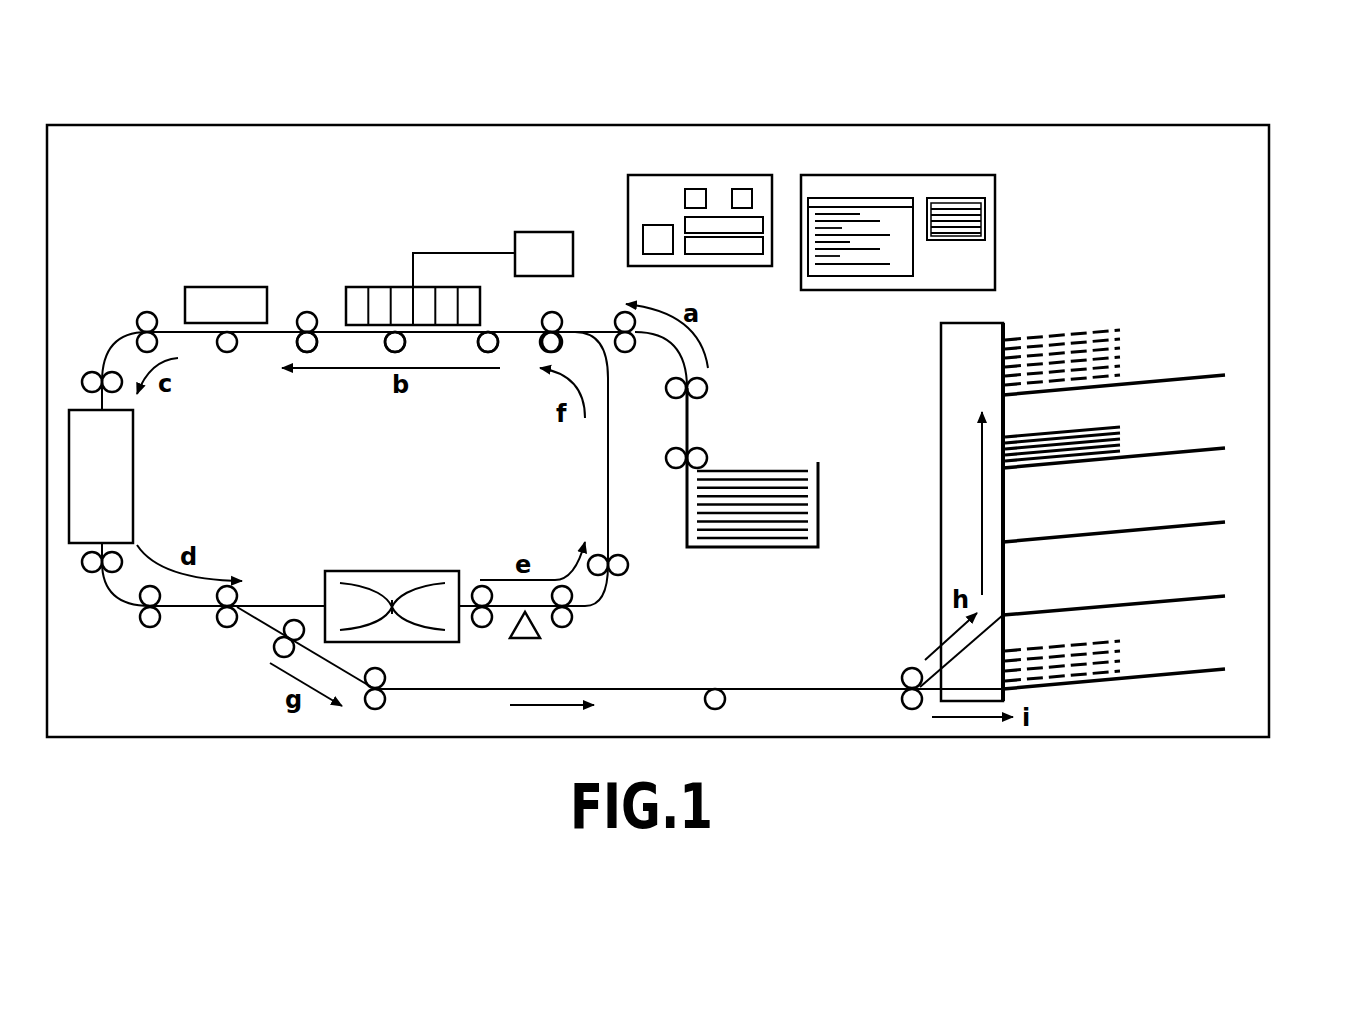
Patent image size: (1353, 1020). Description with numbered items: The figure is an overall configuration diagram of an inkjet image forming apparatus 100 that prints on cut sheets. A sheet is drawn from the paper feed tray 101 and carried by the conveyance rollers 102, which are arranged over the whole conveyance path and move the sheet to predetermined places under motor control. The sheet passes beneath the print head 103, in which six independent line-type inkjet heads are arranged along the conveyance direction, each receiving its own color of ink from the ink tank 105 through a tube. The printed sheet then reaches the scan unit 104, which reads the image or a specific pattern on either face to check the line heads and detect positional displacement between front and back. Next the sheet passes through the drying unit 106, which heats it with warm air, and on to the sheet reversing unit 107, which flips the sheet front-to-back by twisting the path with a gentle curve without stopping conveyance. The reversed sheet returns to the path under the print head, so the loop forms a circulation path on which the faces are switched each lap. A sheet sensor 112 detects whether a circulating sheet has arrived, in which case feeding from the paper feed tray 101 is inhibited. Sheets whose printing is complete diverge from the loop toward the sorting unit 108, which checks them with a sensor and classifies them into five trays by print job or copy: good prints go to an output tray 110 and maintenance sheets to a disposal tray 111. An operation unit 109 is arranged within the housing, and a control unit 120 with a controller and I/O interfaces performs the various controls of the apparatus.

The image forming apparatus 100 is at (1193, 125).
The paper feed tray 101 is at (818, 500).
The conveyance rollers 102 is at (392, 352).
The print head 103 is at (380, 287).
The scan unit 104 is at (228, 287).
The ink tank 105 is at (545, 232).
The drying unit 106 is at (133, 470).
The sheet reversing unit 107 is at (393, 571).
The sorting unit 108 is at (968, 323).
The operation unit 109 is at (910, 175).
The output tray 110 is at (1212, 375).
The disposal tray 111 is at (1212, 669).
The sheet sensor 112 is at (527, 640).
The control unit 120 is at (690, 175).